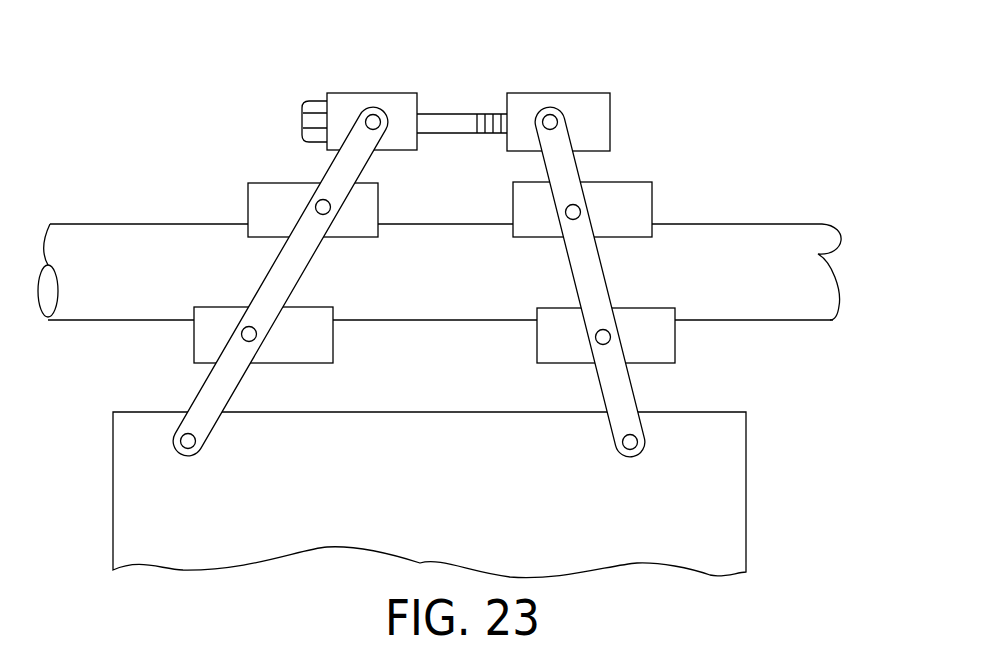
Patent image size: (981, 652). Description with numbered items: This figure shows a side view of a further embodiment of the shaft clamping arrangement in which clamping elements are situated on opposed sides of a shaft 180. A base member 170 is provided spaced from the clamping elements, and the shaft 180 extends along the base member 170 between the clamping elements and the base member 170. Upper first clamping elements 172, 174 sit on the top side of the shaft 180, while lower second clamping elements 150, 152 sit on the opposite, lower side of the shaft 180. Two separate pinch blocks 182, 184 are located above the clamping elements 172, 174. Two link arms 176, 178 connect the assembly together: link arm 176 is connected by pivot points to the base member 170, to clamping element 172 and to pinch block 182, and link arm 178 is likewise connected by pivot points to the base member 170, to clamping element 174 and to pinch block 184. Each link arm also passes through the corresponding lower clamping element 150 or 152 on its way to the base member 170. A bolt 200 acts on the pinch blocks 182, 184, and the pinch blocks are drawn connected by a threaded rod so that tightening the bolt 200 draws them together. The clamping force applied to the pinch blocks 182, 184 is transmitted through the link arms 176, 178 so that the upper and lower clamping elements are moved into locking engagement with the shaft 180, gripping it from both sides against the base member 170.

The lower second clamping element 150 is at (663, 337).
The lower second clamping element 152 is at (307, 323).
The base member 170 is at (472, 509).
The clamping element 172 is at (637, 210).
The clamping element 174 is at (367, 202).
The link arm 176 is at (620, 372).
The link arm 178 is at (226, 379).
The shaft 180 is at (176, 284).
The pinch block 182 is at (583, 108).
The pinch block 184 is at (402, 103).
The bolt 200 is at (313, 105).